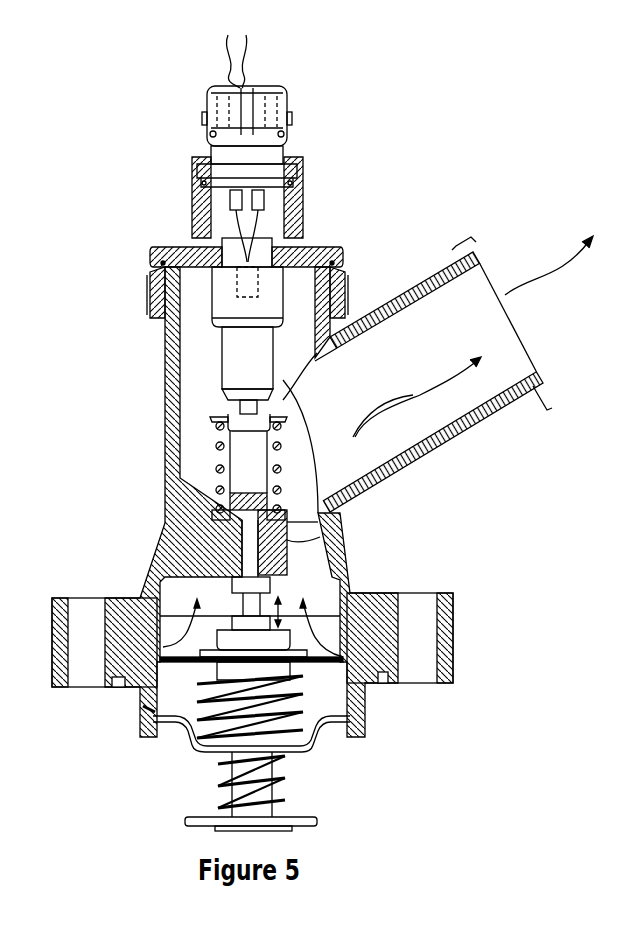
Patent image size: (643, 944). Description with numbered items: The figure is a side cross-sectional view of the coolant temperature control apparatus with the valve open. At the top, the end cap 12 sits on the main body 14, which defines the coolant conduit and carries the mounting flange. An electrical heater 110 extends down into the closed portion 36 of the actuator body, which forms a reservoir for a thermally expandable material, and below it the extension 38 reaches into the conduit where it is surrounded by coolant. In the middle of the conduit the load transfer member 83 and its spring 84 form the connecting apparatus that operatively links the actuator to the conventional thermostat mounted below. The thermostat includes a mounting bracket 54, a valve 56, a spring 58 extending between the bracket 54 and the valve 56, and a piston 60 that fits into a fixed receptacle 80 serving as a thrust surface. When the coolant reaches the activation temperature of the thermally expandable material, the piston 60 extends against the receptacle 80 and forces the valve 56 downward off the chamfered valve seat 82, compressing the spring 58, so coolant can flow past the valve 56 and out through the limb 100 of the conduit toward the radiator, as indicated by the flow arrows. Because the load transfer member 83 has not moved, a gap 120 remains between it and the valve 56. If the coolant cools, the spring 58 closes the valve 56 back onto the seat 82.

The end cap 12 is at (301, 213).
The main body 14 is at (165, 422).
The closed portion 36 is at (213, 308).
The extension 38 is at (223, 357).
The mounting bracket 54 is at (193, 746).
The valve 56 is at (147, 710).
The spring 58 is at (305, 747).
The piston 60 is at (322, 537).
The receptacle 80 is at (248, 493).
The chamfered valve seat 82 is at (142, 597).
The load transfer member 83 is at (276, 452).
The spring 84 is at (281, 421).
The Y-connection 100 is at (403, 290).
The electrical heater 110 is at (237, 280).
The gap 120 is at (288, 597).